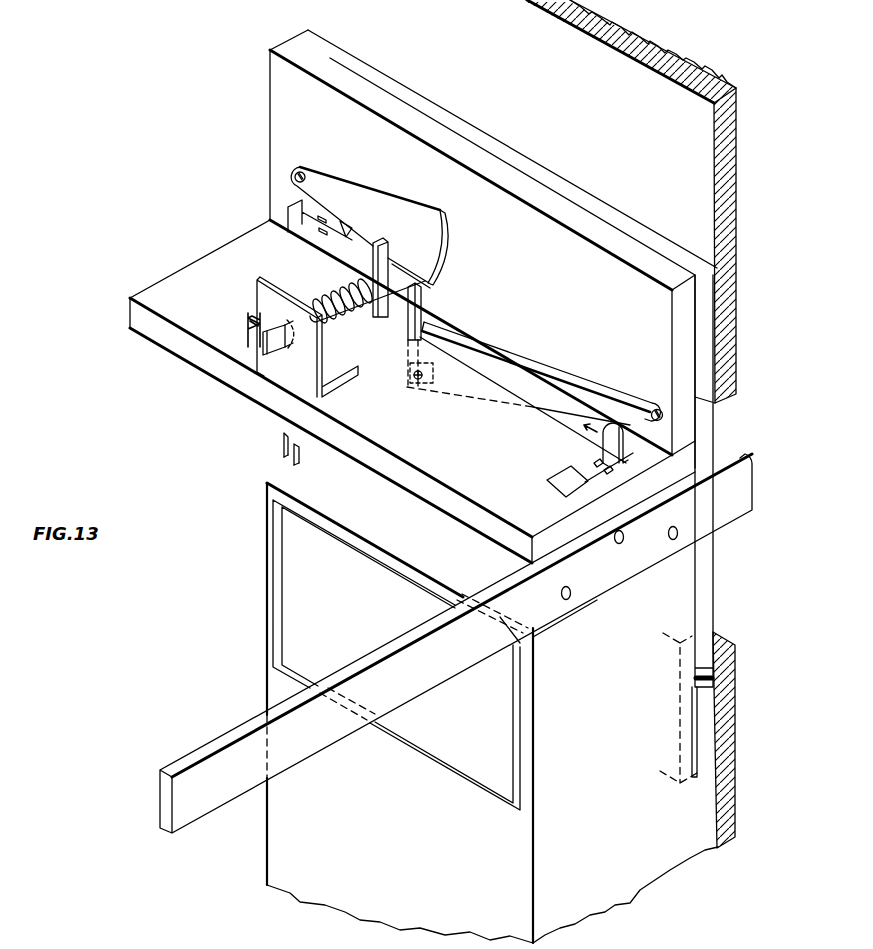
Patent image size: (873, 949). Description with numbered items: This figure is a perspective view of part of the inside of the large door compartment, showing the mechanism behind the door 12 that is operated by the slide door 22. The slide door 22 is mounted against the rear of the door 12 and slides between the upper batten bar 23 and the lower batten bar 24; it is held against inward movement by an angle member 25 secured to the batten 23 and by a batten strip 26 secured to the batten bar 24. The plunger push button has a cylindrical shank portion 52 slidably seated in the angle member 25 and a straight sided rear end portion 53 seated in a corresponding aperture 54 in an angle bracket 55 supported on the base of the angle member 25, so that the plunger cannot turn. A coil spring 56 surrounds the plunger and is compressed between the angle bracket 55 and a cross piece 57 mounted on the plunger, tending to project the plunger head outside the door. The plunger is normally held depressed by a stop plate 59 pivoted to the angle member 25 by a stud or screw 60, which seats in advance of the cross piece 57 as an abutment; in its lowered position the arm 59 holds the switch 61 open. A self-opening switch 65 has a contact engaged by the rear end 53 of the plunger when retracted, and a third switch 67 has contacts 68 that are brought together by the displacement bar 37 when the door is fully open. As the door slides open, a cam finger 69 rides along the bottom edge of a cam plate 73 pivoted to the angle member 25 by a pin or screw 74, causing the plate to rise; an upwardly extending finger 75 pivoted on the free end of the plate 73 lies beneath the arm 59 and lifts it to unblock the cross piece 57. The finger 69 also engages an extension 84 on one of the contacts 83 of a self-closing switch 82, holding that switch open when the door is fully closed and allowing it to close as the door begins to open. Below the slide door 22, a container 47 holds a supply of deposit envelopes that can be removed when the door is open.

The door 12 is at (737, 296).
The slide door 22 is at (713, 600).
The upper batten bar 23 is at (643, 232).
The lower batten bar 24 is at (703, 765).
The angle member 25 is at (155, 327).
The batten strip 26 is at (680, 746).
The displacement bar 37 is at (195, 778).
The container 47 is at (476, 853).
The cylindrical shank portion 52 is at (346, 316).
The straight sided rear end portion 53 is at (258, 351).
The aperture 54 is at (284, 322).
The angle bracket 55 is at (292, 364).
The coil spring 56 is at (345, 298).
The cross piece 57 is at (391, 251).
The stop plate 59 is at (360, 200).
The stud or screw 60 is at (304, 172).
The switch 61 is at (324, 237).
The self-opening switch 65 is at (247, 323).
The third switch 67 is at (292, 461).
The contacts 68 is at (283, 447).
The cam finger 69 is at (625, 438).
The cam plate 73 is at (550, 387).
The pin or screw 74 is at (657, 407).
The finger 75 is at (421, 304).
The switch 82 is at (565, 484).
The contacts 83 is at (596, 462).
The extension 84 is at (631, 452).